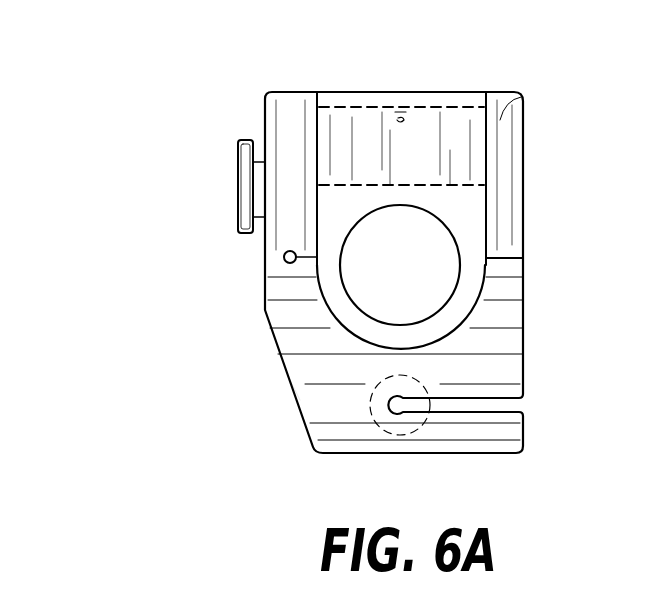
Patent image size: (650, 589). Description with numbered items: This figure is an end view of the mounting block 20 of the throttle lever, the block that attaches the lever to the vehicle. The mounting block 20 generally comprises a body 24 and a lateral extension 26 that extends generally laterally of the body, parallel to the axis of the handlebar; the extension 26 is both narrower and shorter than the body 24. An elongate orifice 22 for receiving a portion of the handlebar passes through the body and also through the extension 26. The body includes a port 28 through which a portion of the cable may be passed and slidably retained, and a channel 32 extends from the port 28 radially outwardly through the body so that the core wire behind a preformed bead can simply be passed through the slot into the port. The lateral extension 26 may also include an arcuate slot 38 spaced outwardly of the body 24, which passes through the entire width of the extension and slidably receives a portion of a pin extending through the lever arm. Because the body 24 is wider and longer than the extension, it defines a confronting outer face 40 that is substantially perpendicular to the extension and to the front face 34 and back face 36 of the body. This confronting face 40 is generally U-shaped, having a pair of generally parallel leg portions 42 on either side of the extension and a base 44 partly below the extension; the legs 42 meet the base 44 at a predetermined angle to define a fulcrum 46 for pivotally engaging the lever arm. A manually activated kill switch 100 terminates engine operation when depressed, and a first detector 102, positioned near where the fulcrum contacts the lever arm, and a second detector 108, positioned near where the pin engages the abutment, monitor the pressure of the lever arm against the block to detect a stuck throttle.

The mounting block 20 is at (133, 256).
The elongate orifice 22 is at (428, 240).
The body 24 is at (290, 92).
The lateral extension 26 is at (368, 115).
The port 28 is at (395, 412).
The channel 32 is at (490, 400).
The front face 34 is at (263, 120).
The back face 36 is at (528, 135).
The arcuate slot 38 is at (497, 120).
The confronting outer face 40 is at (506, 343).
The leg portions 42 is at (522, 96).
The base 44 is at (333, 378).
The fulcrum 46 is at (510, 266).
The kill switch 100 is at (238, 185).
The first detector 102 is at (290, 263).
The second detector 108 is at (400, 118).